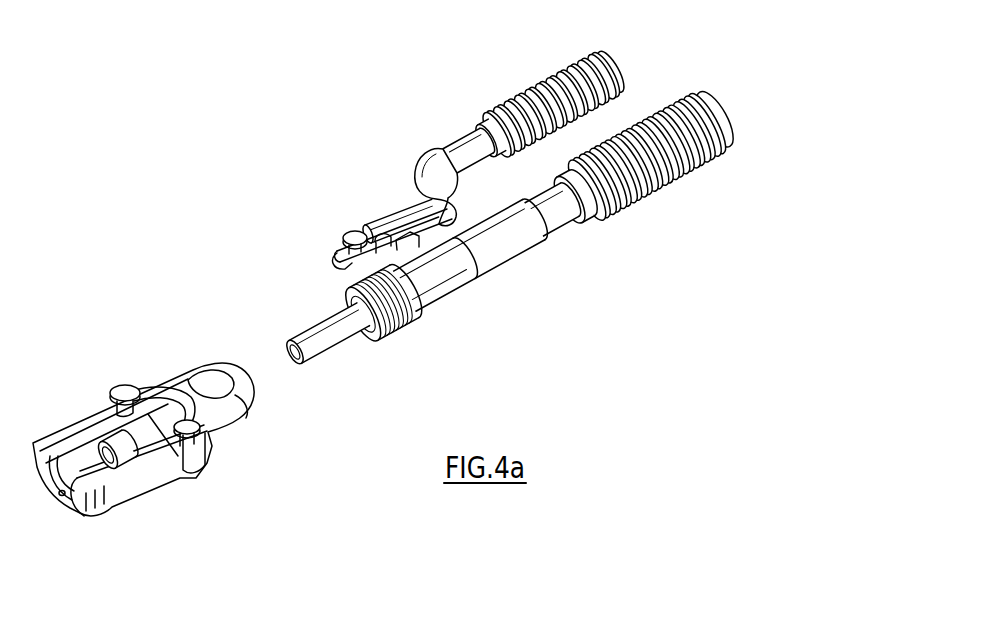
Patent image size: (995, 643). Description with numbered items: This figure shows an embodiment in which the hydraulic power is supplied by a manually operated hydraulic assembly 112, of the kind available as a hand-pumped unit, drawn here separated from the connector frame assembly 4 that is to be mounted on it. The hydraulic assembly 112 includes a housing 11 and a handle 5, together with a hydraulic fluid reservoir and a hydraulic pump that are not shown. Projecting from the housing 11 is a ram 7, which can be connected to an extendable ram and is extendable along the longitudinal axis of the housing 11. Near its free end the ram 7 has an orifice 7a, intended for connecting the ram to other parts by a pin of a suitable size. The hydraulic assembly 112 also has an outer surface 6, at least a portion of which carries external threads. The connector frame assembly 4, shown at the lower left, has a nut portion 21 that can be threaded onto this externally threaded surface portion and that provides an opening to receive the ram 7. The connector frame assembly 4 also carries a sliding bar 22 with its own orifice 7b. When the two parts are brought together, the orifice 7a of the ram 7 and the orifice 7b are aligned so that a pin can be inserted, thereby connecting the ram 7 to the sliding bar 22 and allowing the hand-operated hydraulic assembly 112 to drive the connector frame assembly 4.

The connector frame assembly 4 is at (150, 443).
The handle 5 is at (540, 90).
The outer surface 6 is at (407, 323).
The ram 7 is at (313, 317).
The orifice 7a is at (281, 330).
The orifice 7b is at (153, 473).
The housing 11 is at (518, 257).
The hydraulic assembly 112 is at (499, 230).
The nut portion 21 is at (217, 370).
The sliding bar 22 is at (108, 412).